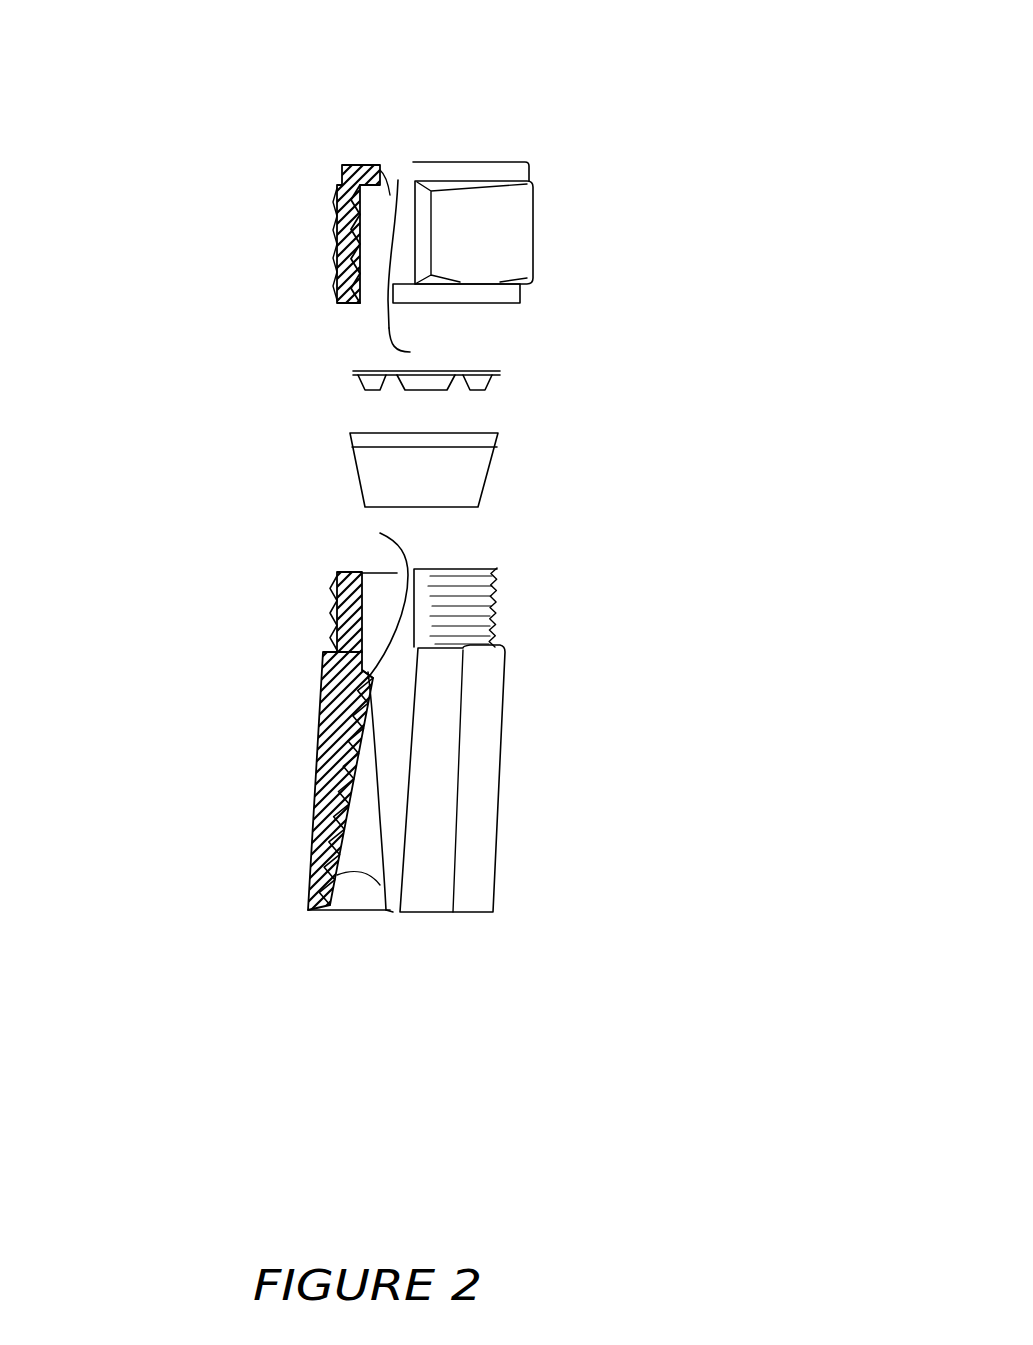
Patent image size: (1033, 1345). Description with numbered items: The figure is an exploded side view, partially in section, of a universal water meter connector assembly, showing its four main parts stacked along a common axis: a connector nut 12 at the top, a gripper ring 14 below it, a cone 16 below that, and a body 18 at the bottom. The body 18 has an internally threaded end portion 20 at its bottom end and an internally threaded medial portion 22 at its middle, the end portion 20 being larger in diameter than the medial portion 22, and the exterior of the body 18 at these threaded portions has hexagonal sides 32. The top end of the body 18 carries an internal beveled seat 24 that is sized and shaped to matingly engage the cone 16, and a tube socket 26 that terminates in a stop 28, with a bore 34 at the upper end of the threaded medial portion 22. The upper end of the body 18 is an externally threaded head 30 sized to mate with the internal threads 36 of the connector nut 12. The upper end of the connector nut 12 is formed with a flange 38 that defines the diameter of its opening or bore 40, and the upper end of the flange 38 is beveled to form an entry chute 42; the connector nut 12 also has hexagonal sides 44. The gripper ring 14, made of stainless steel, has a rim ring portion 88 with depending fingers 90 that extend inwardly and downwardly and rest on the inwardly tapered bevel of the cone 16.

The connector nut 12 is at (548, 185).
The gripper ring 14 is at (504, 392).
The cone 16 is at (498, 478).
The body 18 is at (585, 805).
The internally threaded end portion 20 is at (380, 885).
The internally threaded medial portion 22 is at (393, 912).
The internal beveled seat 24 is at (366, 573).
The tube socket 26 is at (368, 670).
The stop 28 is at (380, 533).
The externally threaded head 30 is at (493, 613).
The hexagonal sides 32 is at (483, 800).
The bore 34 is at (383, 684).
The internal threads 36 is at (355, 264).
The flange 38 is at (410, 352).
The bore 40 is at (398, 180).
The entry chute 42 is at (380, 167).
The hexagonal sides 44 is at (523, 227).
The rim ring portion 88 is at (385, 371).
The depending fingers 90 is at (371, 391).